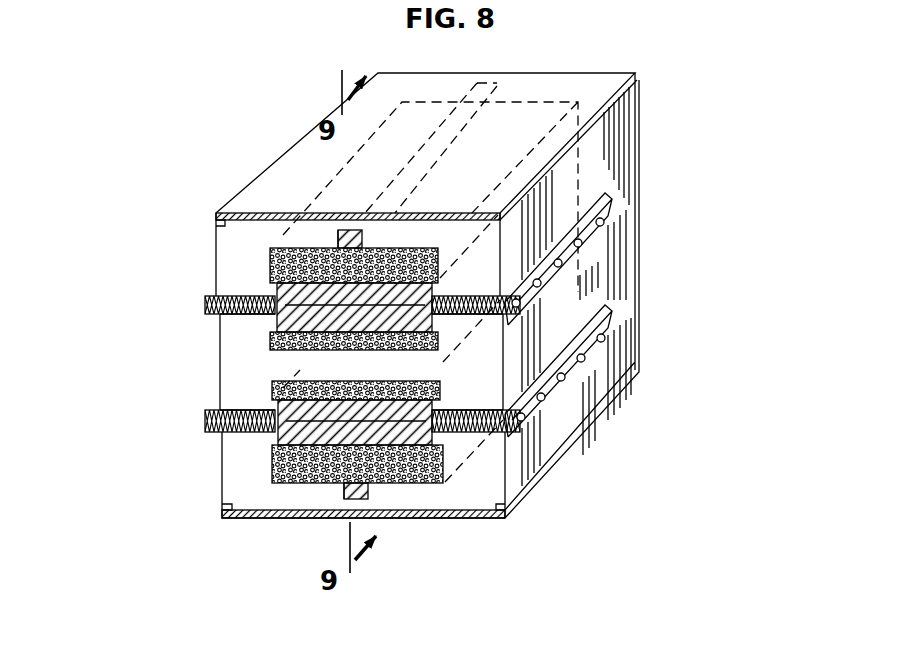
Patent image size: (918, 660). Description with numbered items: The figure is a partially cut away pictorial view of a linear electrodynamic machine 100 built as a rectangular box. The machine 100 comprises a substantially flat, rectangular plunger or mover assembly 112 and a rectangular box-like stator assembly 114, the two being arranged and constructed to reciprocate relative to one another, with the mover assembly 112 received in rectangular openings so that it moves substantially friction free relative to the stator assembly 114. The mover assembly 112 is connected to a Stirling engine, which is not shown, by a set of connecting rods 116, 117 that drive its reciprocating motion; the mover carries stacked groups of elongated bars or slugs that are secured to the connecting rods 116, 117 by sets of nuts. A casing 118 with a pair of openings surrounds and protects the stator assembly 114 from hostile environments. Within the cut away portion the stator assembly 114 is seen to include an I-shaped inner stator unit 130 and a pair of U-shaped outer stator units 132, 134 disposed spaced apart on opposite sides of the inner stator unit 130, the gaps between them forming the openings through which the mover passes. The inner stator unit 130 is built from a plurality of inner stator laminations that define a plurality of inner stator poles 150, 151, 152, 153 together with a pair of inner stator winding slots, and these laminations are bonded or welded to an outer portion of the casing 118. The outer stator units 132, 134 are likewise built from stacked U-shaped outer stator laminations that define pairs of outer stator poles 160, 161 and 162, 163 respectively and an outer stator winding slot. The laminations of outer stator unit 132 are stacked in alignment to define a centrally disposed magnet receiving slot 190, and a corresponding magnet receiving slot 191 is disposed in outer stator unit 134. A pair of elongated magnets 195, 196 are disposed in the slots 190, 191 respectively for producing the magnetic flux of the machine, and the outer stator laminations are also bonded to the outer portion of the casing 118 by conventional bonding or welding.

The electrodynamic machine 100 is at (140, 538).
The mover assembly 112 is at (176, 257).
The stator assembly 114 is at (682, 102).
The connecting rod 116 is at (662, 173).
The connecting rod 117 is at (655, 301).
The casing 118 is at (618, 356).
The inner stator unit 130 is at (240, 357).
The outer stator unit 132 is at (230, 240).
The outer stator unit 134 is at (243, 472).
The inner stator pole 150 is at (200, 322).
The inner stator pole 151 is at (198, 392).
The inner stator pole 152 is at (652, 211).
The inner stator pole 153 is at (658, 277).
The outer stator pole 160 is at (200, 301).
The outer stator pole 161 is at (198, 437).
The outer stator pole 162 is at (655, 140).
The outer stator pole 163 is at (658, 326).
The magnet receiving slot 190 is at (338, 246).
The magnet receiving slot 191 is at (370, 496).
The elongated magnet 195 is at (348, 246).
The elongated magnet 196 is at (340, 498).